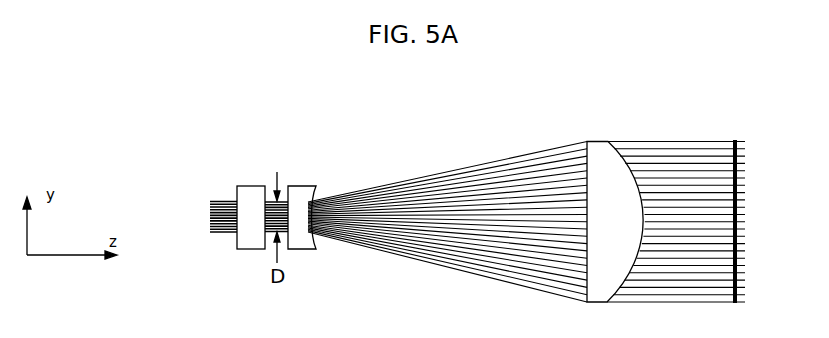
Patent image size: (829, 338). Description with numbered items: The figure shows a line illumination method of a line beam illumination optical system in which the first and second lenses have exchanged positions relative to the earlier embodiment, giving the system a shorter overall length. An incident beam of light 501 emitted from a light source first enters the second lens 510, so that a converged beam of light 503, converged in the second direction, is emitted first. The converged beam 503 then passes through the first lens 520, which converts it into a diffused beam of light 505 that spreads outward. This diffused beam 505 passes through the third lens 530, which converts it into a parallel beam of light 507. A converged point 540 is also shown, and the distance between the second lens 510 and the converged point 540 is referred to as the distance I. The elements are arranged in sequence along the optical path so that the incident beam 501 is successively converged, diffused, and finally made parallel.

The incident beam of light 501 is at (221, 201).
The second lens 510 is at (252, 186).
The converged beam of light 503 is at (282, 183).
The first lens 520 is at (303, 186).
The diffused beam of light 505 is at (442, 173).
The third lens 530 is at (592, 141).
The parallel beam of light 507 is at (660, 141).
The converged point 540 is at (732, 141).